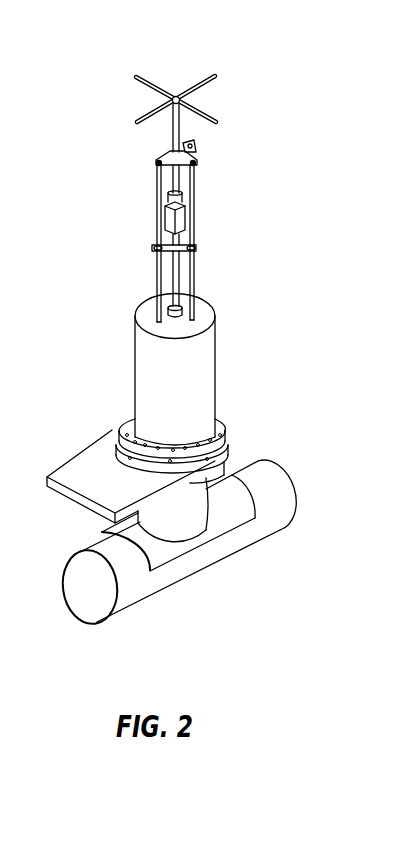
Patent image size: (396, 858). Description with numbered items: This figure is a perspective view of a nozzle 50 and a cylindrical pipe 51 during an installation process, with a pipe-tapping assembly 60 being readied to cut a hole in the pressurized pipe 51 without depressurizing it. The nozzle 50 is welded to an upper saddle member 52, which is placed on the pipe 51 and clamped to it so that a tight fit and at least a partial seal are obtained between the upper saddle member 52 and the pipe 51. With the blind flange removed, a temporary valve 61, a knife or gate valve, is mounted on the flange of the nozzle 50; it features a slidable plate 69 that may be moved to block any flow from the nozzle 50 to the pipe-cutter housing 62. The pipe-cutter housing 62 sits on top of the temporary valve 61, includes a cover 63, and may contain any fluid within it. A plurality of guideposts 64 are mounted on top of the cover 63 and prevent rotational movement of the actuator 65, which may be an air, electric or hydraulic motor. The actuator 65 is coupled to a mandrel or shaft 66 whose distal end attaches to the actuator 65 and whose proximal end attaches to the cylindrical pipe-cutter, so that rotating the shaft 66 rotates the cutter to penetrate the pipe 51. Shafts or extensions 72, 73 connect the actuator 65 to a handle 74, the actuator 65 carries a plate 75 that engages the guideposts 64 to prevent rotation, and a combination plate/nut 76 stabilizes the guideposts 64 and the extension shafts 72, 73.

The nozzle 50 is at (166, 560).
The pipe 51 is at (102, 550).
The upper saddle member 52 is at (228, 525).
The pipe-tapping assembly 60 is at (175, 246).
The temporary valve 61 is at (108, 425).
The pipe-cutter housing 62 is at (225, 378).
The cover 63 is at (200, 314).
The guideposts 64 is at (192, 150).
The actuator 65 is at (172, 218).
The shaft 66 is at (176, 272).
The slidable plate 69 is at (77, 475).
The extension shaft 72 is at (176, 173).
The extension shaft 73 is at (173, 135).
The handle 74 is at (150, 86).
The plate 75 is at (160, 250).
The combination plate/nut 76 is at (188, 146).